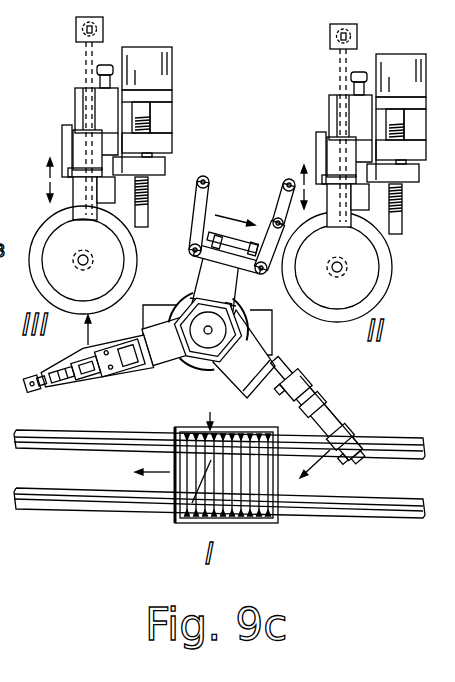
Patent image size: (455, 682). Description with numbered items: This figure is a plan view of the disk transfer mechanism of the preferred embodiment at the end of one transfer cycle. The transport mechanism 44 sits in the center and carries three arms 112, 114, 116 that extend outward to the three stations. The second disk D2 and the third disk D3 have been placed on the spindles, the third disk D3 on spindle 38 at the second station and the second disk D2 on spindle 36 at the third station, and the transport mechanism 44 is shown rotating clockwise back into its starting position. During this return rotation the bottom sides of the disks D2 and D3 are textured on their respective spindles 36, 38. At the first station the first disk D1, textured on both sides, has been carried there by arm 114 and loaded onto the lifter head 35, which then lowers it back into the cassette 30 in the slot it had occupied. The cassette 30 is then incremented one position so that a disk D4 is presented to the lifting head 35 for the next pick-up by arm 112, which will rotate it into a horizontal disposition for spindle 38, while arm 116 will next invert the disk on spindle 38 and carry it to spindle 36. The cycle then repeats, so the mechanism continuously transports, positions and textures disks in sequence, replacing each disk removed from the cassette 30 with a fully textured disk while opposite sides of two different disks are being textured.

The cassette 30 is at (226, 496).
The lifter head 35 is at (176, 523).
The spindle 36 is at (92, 262).
The spindle 38 is at (342, 266).
The transport mechanism 44 is at (196, 374).
The arm 112 is at (334, 412).
The arm 114 is at (105, 372).
The arm 116 is at (200, 209).
The first disk D1 is at (140, 464).
The second disk D2 is at (57, 283).
The third disk D3 is at (364, 282).
The disk D4 is at (232, 416).